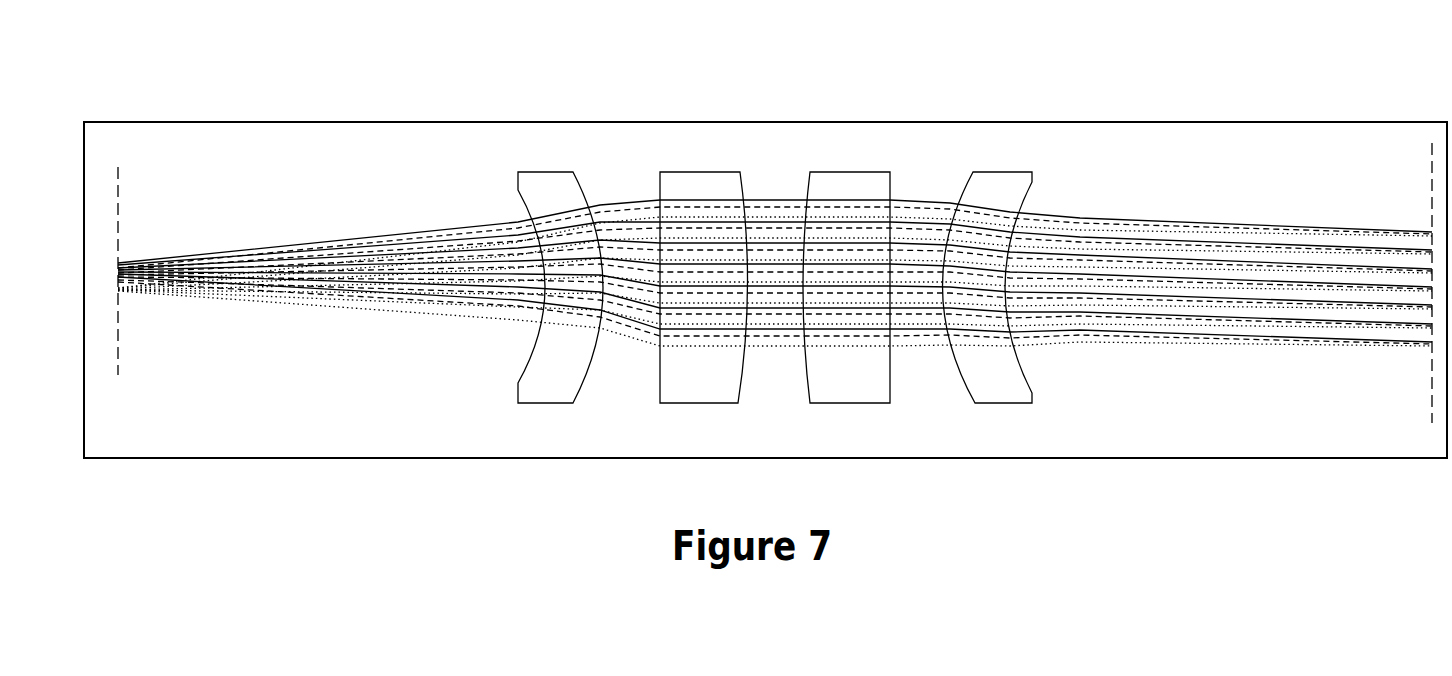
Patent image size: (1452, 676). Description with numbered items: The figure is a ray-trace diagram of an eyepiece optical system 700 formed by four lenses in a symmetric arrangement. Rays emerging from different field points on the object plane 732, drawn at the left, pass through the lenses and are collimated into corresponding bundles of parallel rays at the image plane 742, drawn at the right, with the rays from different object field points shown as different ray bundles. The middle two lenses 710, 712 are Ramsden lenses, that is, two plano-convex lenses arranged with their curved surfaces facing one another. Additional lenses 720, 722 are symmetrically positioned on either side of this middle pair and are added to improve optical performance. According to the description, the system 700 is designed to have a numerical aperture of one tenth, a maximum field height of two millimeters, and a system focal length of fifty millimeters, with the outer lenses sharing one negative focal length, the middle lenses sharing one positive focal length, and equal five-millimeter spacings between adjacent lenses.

The optical system 700 is at (255, 78).
The lens 710 is at (658, 382).
The lens 712 is at (803, 382).
The lens 720 is at (523, 372).
The lens 722 is at (1032, 380).
The object plane 732 is at (120, 327).
The image plane 742 is at (1430, 186).